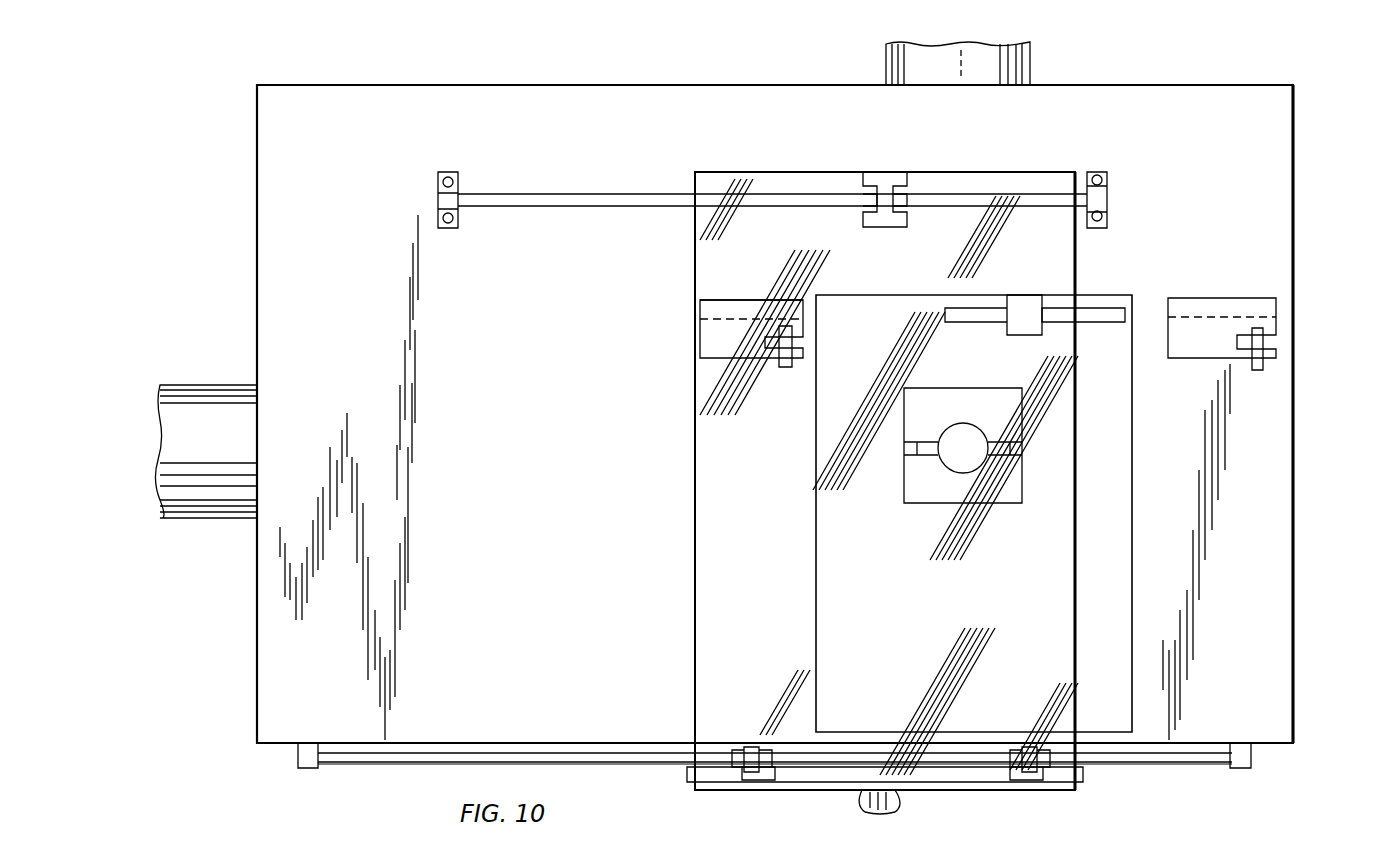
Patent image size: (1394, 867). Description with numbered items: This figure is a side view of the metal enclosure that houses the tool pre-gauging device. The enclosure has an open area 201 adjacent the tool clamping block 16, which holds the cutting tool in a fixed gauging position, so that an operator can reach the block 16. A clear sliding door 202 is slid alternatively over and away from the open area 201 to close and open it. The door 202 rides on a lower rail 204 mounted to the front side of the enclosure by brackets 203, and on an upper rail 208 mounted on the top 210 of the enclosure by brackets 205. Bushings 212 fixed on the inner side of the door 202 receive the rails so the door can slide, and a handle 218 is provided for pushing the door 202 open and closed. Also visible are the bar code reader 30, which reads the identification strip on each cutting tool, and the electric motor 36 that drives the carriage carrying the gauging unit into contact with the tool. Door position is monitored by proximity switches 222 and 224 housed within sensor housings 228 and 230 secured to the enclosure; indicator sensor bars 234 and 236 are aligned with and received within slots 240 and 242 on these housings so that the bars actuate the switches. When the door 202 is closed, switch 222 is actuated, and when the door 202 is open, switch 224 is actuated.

The tool clamping block 16 is at (933, 503).
The bar code reader 30 is at (1032, 58).
The electric motor 36 is at (205, 385).
The open area 201 is at (1128, 600).
The sliding door 202 is at (710, 597).
The brackets 203 is at (303, 765).
The rail 204 is at (418, 764).
The brackets 205 is at (443, 228).
The rail 208 is at (592, 196).
The top 210 is at (540, 550).
The bushings 212 is at (887, 182).
The handle 218 is at (900, 806).
The proximity switch 222 is at (1258, 372).
The proximity switch 224 is at (785, 367).
The sensor housing 228 is at (1268, 323).
The sensor housing 230 is at (712, 347).
The indicator sensor bar 234 is at (1098, 307).
The indicator sensor bar 236 is at (975, 308).
The slot 240 is at (1212, 302).
The slot 242 is at (718, 302).